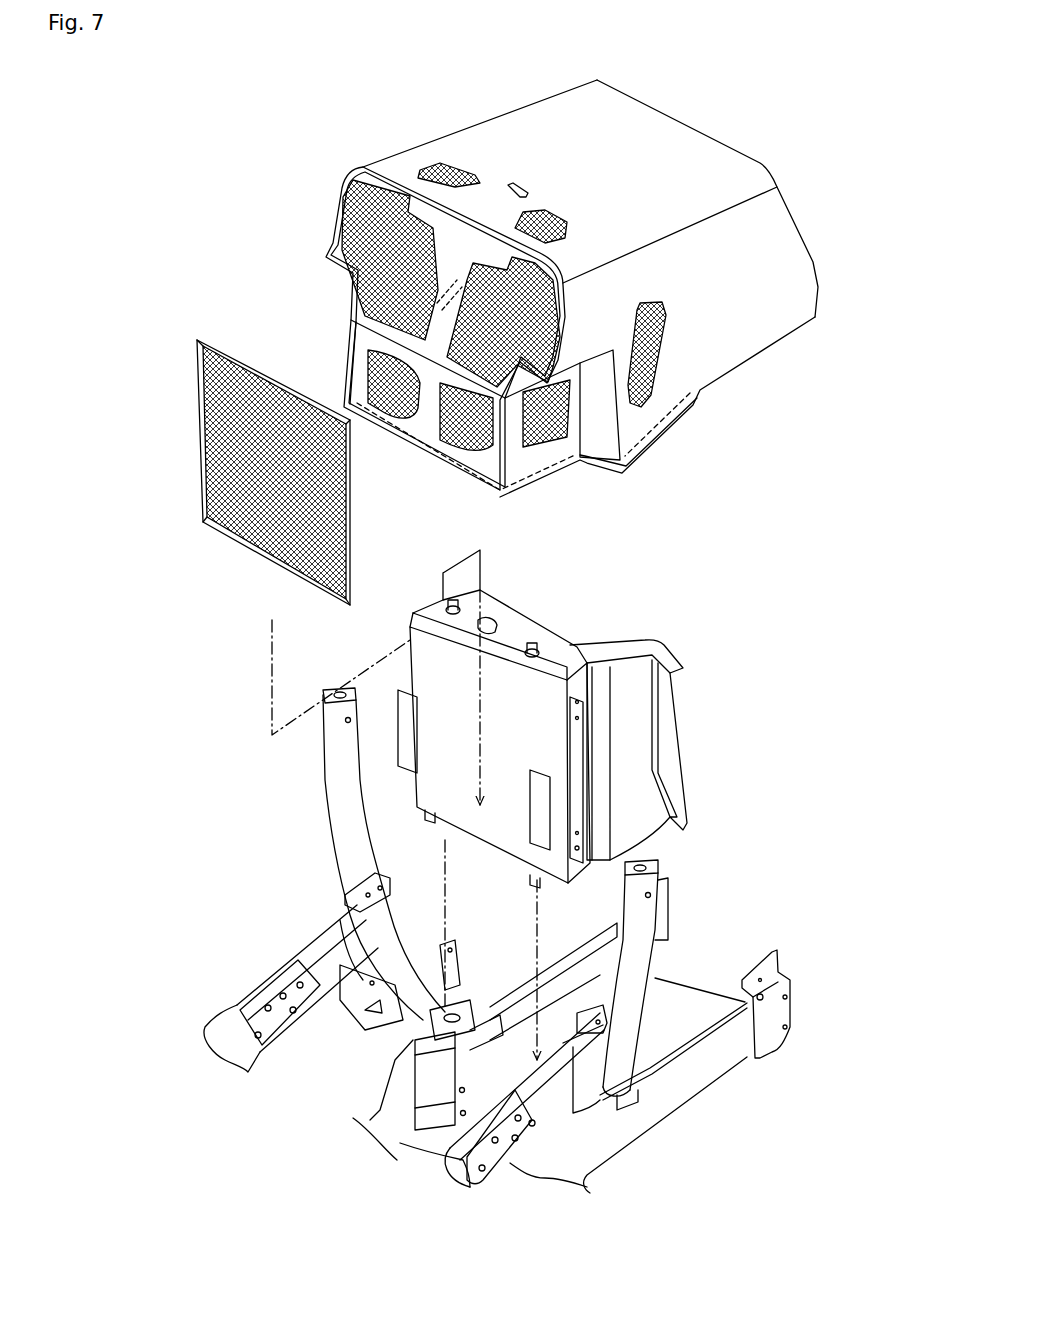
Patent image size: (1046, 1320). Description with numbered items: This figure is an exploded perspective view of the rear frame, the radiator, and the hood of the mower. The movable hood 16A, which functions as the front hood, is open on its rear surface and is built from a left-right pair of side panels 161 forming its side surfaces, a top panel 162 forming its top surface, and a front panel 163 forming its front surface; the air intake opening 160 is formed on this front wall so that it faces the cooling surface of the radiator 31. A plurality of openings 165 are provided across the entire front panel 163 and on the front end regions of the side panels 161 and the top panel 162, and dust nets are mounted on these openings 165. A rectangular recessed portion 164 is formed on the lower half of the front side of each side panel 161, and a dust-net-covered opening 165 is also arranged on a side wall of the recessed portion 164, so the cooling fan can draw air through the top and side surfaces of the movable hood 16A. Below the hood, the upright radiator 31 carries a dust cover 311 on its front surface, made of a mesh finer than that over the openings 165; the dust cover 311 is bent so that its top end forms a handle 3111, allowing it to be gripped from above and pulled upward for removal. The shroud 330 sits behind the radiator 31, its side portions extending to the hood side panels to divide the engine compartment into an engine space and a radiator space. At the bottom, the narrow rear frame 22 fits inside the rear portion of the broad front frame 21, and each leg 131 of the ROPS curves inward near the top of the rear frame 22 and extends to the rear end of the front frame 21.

The movable hood 16A is at (482, 322).
The top panel 162 is at (660, 135).
The side panels 161 is at (340, 195).
The air intake opening 160 is at (350, 207).
The openings 165 is at (465, 160).
The rectangular recessed portion 164 is at (325, 295).
The front panel 163 is at (355, 342).
The handle 3111 is at (203, 340).
The dust cover 311 is at (255, 443).
The radiator 31 is at (507, 647).
The shroud 330 is at (627, 673).
The leg 131 is at (338, 820).
The front frame 21 is at (240, 1022).
The rear frame 22 is at (510, 1000).